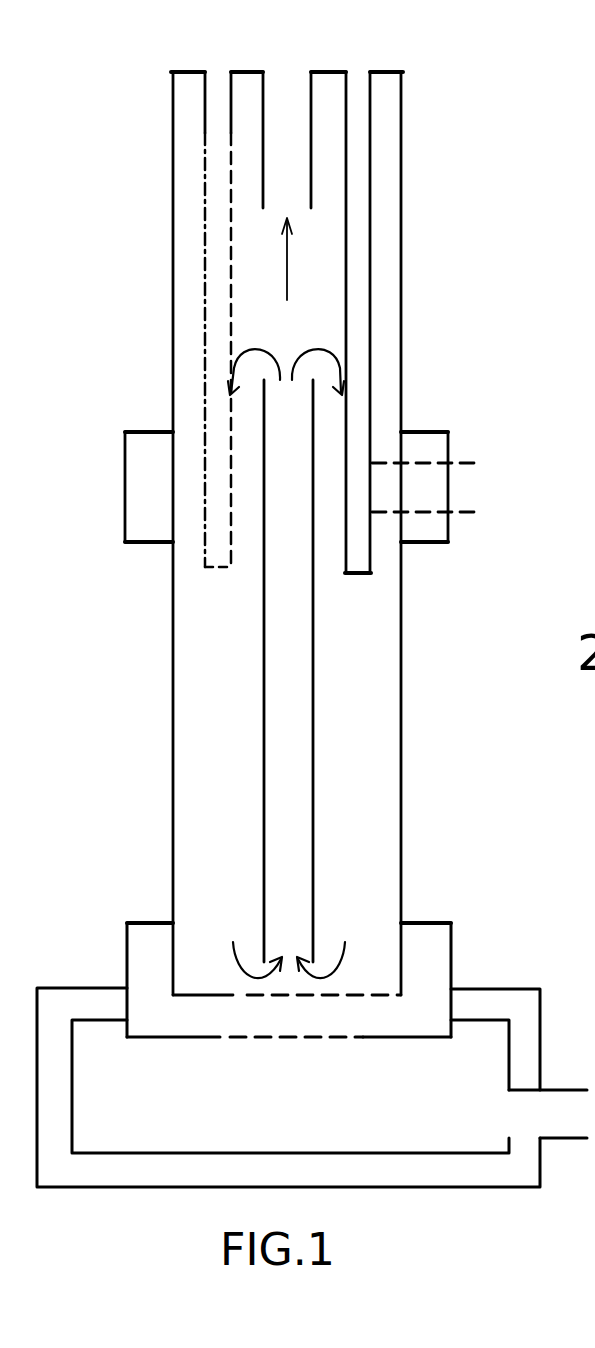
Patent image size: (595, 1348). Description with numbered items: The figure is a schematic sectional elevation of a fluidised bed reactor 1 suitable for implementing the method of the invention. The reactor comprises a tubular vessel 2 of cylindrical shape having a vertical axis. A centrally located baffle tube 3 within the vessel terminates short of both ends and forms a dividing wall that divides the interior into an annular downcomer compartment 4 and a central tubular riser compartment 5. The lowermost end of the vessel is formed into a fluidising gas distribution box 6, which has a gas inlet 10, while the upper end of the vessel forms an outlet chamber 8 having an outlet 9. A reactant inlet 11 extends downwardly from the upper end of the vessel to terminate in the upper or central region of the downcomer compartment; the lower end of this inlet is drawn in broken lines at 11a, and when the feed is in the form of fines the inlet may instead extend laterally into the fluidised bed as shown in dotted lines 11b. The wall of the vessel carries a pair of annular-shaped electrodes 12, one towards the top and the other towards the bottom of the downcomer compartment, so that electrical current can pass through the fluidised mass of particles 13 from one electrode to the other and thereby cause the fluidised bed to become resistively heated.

The fluidised bed reactor 1 is at (427, 220).
The tubular vessel 2 is at (401, 603).
The baffle tube 3 is at (313, 717).
The annular downcomer compartment 4 is at (212, 667).
The central tubular riser compartment 5 is at (288, 762).
The fluidising gas distribution box 6 is at (299, 1122).
The outlet chamber 8 is at (235, 271).
The outlet 9 is at (311, 35).
The gas inlet 10 is at (558, 1100).
The reactant inlet 11 is at (218, 37).
The lower end of inlet tube 11a is at (212, 337).
The laterally extending inlet 11b is at (463, 463).
The annular-shaped electrodes 12 is at (143, 530).
The fluidised mass of particles 13 is at (212, 818).